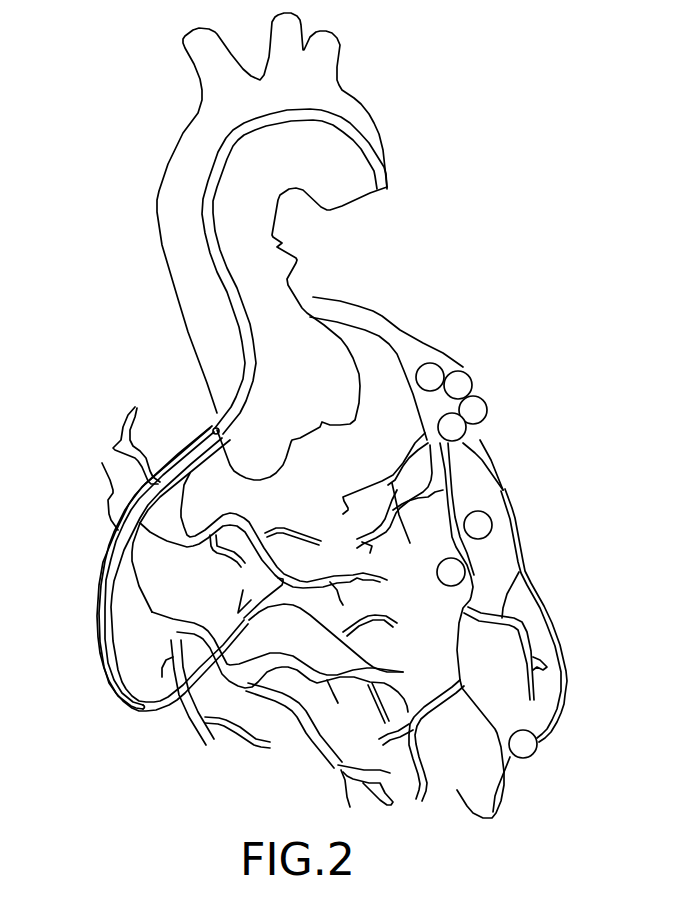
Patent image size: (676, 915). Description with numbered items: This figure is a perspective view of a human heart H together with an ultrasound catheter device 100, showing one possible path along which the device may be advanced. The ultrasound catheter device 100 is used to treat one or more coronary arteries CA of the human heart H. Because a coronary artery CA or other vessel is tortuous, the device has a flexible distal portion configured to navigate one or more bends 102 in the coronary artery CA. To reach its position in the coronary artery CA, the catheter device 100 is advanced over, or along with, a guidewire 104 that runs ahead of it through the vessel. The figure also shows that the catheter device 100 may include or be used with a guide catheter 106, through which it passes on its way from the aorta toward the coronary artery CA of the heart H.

The ultrasound catheter device 100 is at (114, 448).
The bends 102 is at (130, 712).
The guidewire 104 is at (197, 667).
The guide catheter 106 is at (340, 113).
The coronary artery CA is at (107, 688).
The human heart H is at (488, 453).